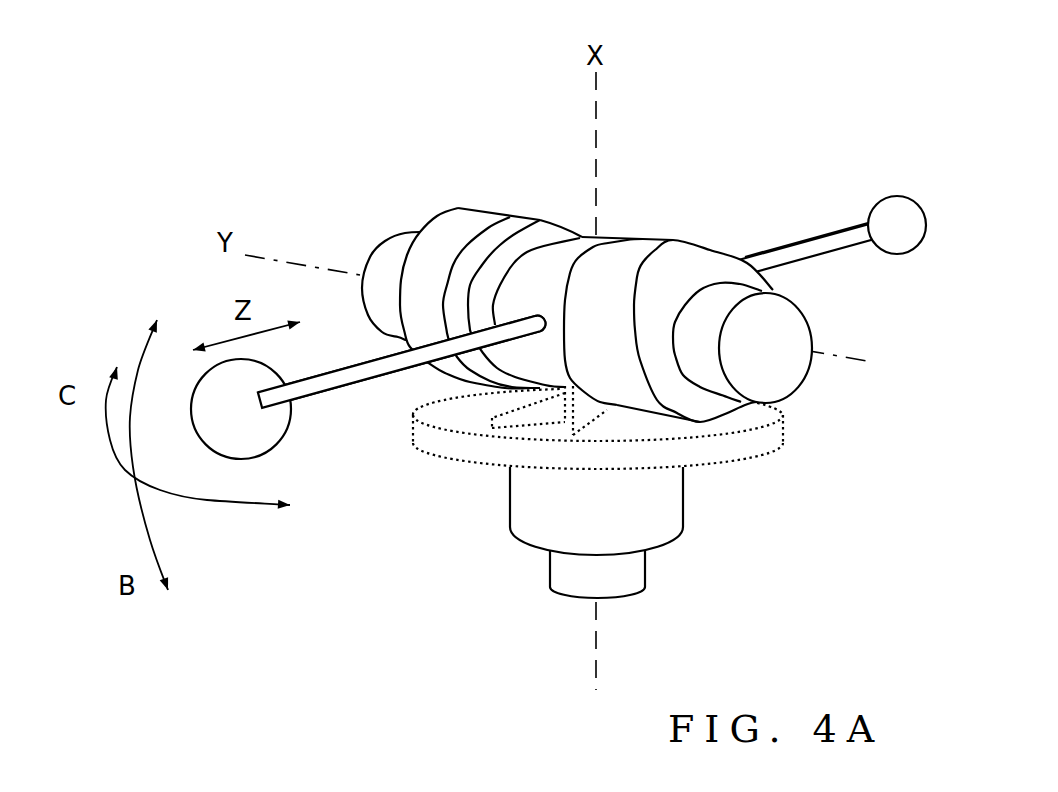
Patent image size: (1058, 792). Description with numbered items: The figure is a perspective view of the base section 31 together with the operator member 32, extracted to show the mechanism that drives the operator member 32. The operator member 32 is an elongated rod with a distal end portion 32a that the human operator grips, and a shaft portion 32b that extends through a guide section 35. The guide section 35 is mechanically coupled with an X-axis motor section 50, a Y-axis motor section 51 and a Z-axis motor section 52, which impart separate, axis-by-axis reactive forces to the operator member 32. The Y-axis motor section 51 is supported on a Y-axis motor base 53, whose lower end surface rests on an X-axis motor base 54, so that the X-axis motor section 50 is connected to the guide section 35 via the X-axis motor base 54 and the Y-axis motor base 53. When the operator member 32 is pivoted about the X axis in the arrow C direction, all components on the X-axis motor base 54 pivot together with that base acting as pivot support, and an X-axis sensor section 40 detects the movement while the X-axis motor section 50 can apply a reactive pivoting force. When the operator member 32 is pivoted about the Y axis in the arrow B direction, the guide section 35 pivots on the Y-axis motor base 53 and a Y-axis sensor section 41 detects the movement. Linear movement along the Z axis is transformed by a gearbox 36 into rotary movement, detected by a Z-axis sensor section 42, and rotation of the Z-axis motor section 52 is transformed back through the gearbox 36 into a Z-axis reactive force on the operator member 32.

The base section 31 is at (398, 545).
The operator member 32 is at (827, 257).
The distal end portion 32a is at (897, 197).
The shaft portion 32b is at (773, 243).
The guide section 35 is at (553, 272).
The gearbox 36 is at (540, 220).
The X-axis sensor section 40 is at (633, 595).
The Y-axis sensor section 41 is at (792, 388).
The Z-axis sensor section 42 is at (383, 237).
The X-axis motor section 50 is at (683, 527).
The Y-axis motor section 51 is at (675, 242).
The Z-axis motor section 52 is at (482, 208).
The Y-axis motor base 53 is at (553, 413).
The X-axis motor base 54 is at (730, 462).